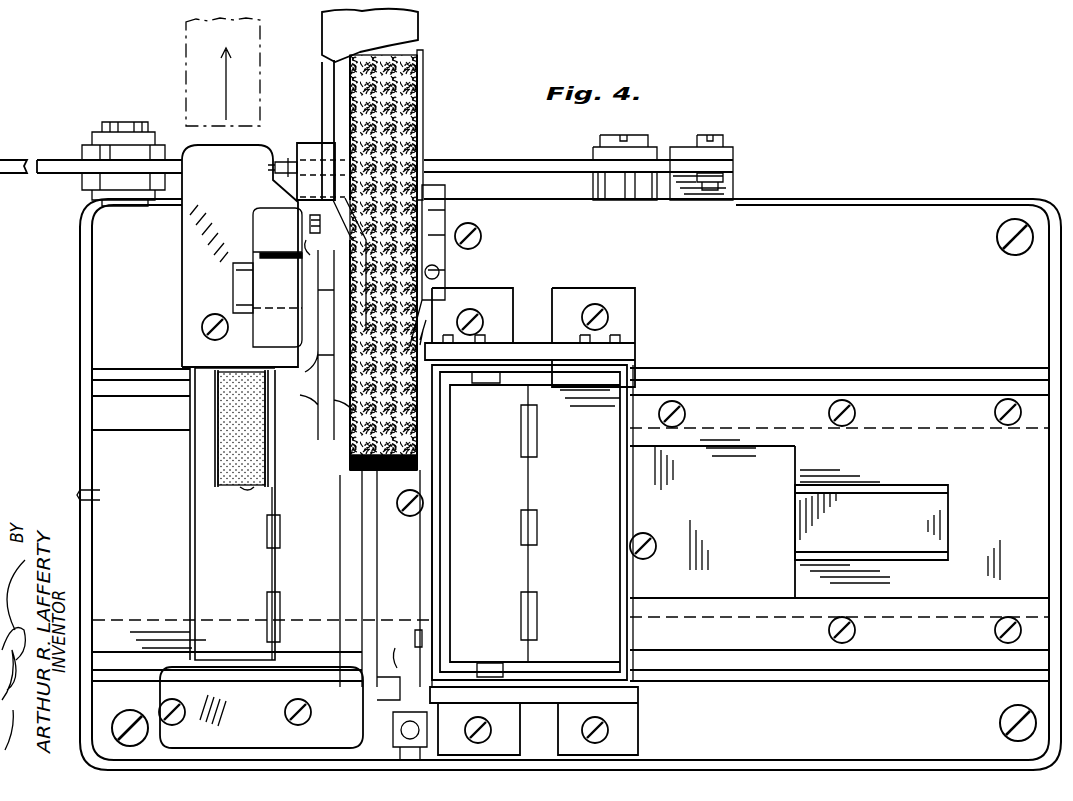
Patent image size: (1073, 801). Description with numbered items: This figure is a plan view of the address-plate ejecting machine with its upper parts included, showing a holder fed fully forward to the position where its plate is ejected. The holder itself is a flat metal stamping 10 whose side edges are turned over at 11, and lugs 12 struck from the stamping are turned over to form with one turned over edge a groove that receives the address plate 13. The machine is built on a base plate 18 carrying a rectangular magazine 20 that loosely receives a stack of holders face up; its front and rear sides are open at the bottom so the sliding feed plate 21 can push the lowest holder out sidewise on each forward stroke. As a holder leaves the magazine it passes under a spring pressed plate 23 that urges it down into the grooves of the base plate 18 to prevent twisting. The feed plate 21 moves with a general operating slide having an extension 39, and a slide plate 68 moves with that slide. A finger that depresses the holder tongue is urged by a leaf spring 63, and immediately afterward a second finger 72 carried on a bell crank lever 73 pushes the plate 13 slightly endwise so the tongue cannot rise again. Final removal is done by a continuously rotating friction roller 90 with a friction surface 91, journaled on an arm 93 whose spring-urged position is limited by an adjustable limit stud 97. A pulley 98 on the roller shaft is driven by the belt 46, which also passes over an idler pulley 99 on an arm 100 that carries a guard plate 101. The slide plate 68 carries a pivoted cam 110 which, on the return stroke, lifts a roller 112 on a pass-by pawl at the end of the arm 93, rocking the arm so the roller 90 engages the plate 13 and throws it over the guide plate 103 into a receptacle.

The flat metal stamping 10 is at (292, 552).
The turned over side edges 11 is at (195, 506).
The lugs 12 is at (282, 532).
The address plate 13 is at (195, 44).
The base plate 18 is at (981, 213).
The magazine 20 is at (524, 350).
The feed plate 21 is at (364, 482).
The spring pressed plate 23 is at (160, 692).
The extension 39 is at (928, 510).
The belt 46 is at (406, 151).
The leaf spring 63 is at (446, 272).
The slide plate 68 is at (17, 162).
The second finger 72 is at (399, 662).
The bell crank lever 73 is at (420, 728).
The friction roller 90 is at (223, 472).
The friction surface 91 is at (260, 500).
The arm 93 is at (304, 153).
The adjustable limit stud 97 is at (313, 243).
The pulley 98 is at (358, 420).
The idler pulley 99 is at (418, 78).
The arm 100 is at (360, 287).
The guard plate 101 is at (416, 24).
The guide plate 103 is at (190, 207).
The pivoted cam 110 is at (175, 159).
The roller 112 is at (268, 170).